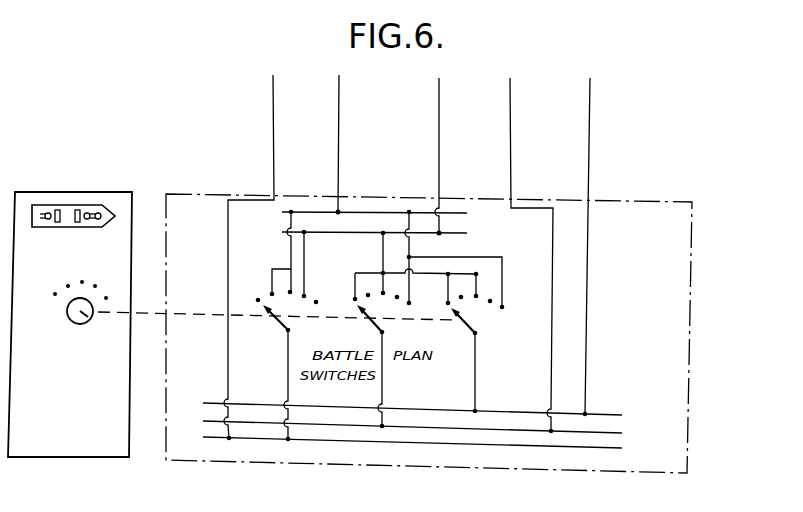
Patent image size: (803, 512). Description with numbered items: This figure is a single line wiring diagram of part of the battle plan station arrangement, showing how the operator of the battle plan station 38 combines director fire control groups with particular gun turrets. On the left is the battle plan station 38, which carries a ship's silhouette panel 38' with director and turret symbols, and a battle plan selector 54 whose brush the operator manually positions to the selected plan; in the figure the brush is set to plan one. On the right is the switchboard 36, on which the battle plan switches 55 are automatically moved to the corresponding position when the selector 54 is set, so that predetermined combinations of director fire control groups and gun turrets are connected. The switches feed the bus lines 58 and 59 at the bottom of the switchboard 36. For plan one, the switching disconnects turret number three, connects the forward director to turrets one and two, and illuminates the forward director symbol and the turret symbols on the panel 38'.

The switchboard 36 is at (692, 371).
The battle plan station 38 is at (70, 342).
The ship's silhouette panel 38' is at (73, 197).
The battle plan selector 54 is at (95, 307).
The battle plan switches 55 is at (509, 352).
The bus 58 is at (418, 427).
The bus 59 is at (504, 410).